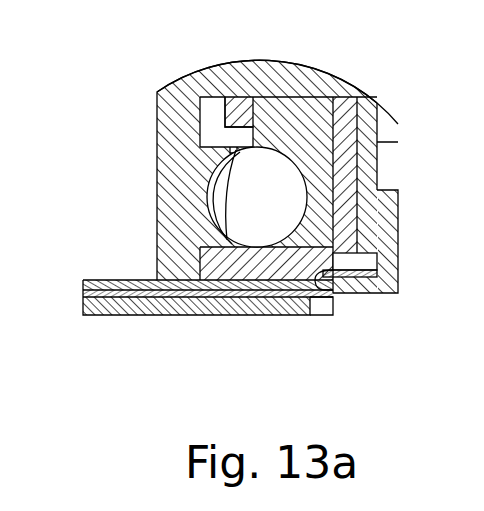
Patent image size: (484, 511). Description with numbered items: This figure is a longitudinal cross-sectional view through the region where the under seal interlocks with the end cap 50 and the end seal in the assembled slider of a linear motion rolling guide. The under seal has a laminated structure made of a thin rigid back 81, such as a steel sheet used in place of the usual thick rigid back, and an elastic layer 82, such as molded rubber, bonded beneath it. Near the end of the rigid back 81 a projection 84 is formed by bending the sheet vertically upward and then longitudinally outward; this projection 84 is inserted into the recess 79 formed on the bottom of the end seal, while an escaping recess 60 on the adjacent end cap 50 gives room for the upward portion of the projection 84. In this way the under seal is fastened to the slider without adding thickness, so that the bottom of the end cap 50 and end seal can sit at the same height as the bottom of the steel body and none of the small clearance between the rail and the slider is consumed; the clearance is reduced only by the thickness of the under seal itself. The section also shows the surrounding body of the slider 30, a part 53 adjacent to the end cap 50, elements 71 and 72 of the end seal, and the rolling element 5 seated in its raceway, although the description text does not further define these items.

The housing body 30 is at (157, 166).
The end cap 50 is at (331, 70).
The retaining element 53 is at (209, 130).
The flexible tab 71 is at (379, 118).
The step portion 72 is at (399, 190).
The projection 84 is at (351, 263).
The recess 79 is at (366, 292).
The ball 5 is at (258, 202).
The thin rigid back 81 is at (84, 287).
The elastic layer 82 is at (100, 316).
The escaping recess 60 is at (336, 297).